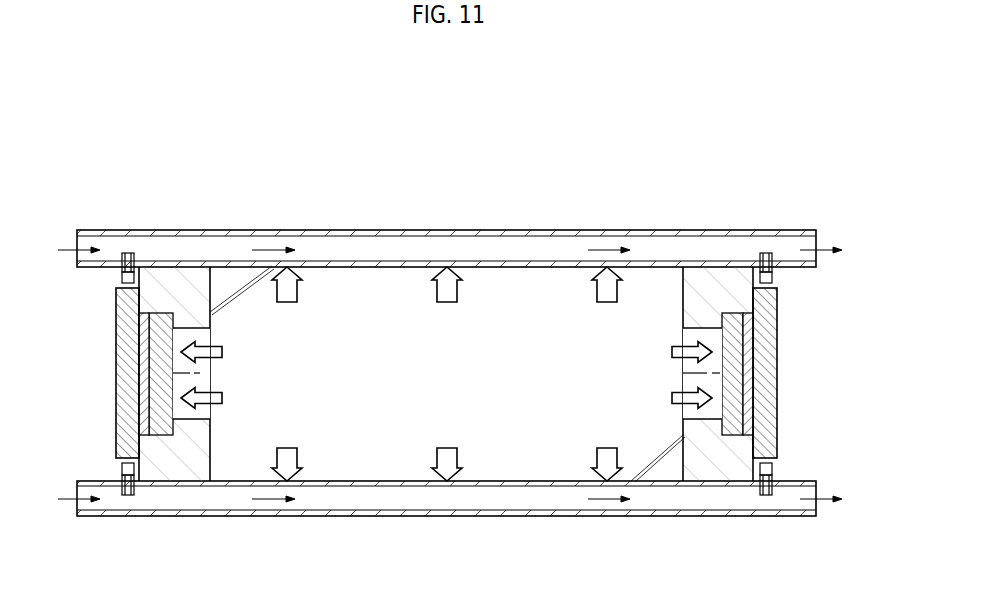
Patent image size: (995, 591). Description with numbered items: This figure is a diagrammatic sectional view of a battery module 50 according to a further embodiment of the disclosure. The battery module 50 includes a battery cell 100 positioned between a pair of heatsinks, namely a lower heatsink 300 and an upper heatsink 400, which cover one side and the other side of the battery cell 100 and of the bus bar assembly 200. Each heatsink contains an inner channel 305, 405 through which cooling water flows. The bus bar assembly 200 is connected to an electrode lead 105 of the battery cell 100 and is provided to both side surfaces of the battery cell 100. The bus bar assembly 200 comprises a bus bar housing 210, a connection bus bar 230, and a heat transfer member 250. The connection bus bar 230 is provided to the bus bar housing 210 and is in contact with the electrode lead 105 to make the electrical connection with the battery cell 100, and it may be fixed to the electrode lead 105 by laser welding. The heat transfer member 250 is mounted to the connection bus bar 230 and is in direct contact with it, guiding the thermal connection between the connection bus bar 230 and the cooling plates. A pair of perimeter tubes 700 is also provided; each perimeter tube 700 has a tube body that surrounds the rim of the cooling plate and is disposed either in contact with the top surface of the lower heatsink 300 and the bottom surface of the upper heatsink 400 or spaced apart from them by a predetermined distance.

The battery module 50 is at (450, 316).
The battery cell 100 is at (578, 298).
The electrode lead 105 is at (197, 332).
The bus bar assembly 200 is at (182, 254).
The bus bar housing 210 is at (736, 288).
The connection bus bar 230 is at (735, 380).
The heat transfer member 250 is at (745, 350).
The lower heatsink 300 is at (413, 517).
The inner channel 305 is at (493, 500).
The upper heatsink 400 is at (413, 233).
The inner channel 405 is at (493, 250).
The perimeter tube 700 is at (117, 296).